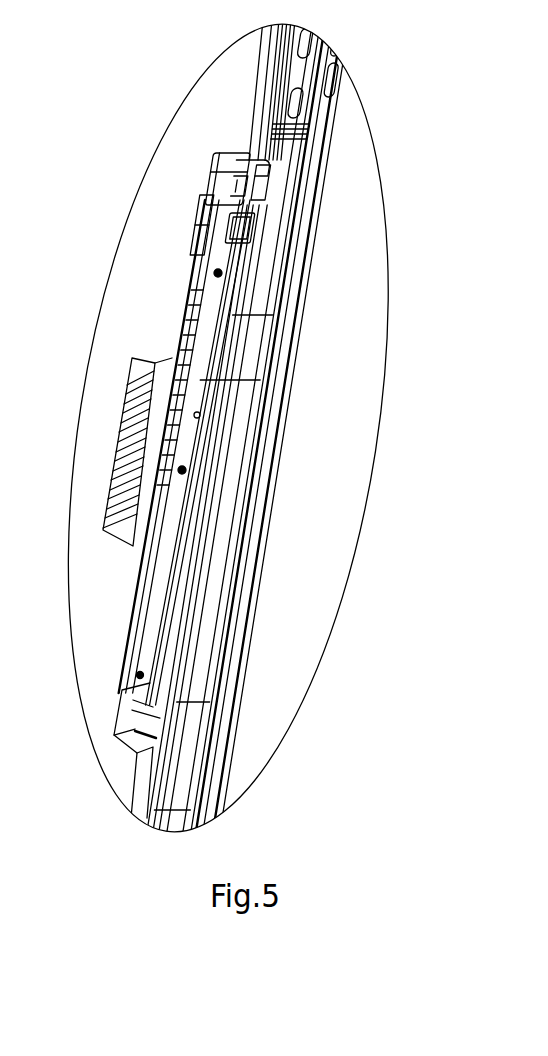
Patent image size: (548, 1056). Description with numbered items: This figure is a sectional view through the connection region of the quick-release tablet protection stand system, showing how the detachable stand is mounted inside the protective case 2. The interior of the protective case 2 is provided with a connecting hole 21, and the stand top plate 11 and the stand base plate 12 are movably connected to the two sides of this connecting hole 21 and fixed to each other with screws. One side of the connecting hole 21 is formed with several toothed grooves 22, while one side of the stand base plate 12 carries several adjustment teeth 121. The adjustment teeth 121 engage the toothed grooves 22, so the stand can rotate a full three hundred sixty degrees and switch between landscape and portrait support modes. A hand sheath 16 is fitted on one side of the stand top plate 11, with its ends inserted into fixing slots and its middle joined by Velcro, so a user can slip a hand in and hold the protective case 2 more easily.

The protective case 2 is at (227, 167).
The toothed grooves 22 is at (237, 187).
The stand top plate 11 is at (210, 201).
The hand sheath 16 is at (130, 421).
The adjustment teeth 121 is at (258, 182).
The connecting hole 21 is at (243, 203).
The stand base plate 12 is at (250, 255).